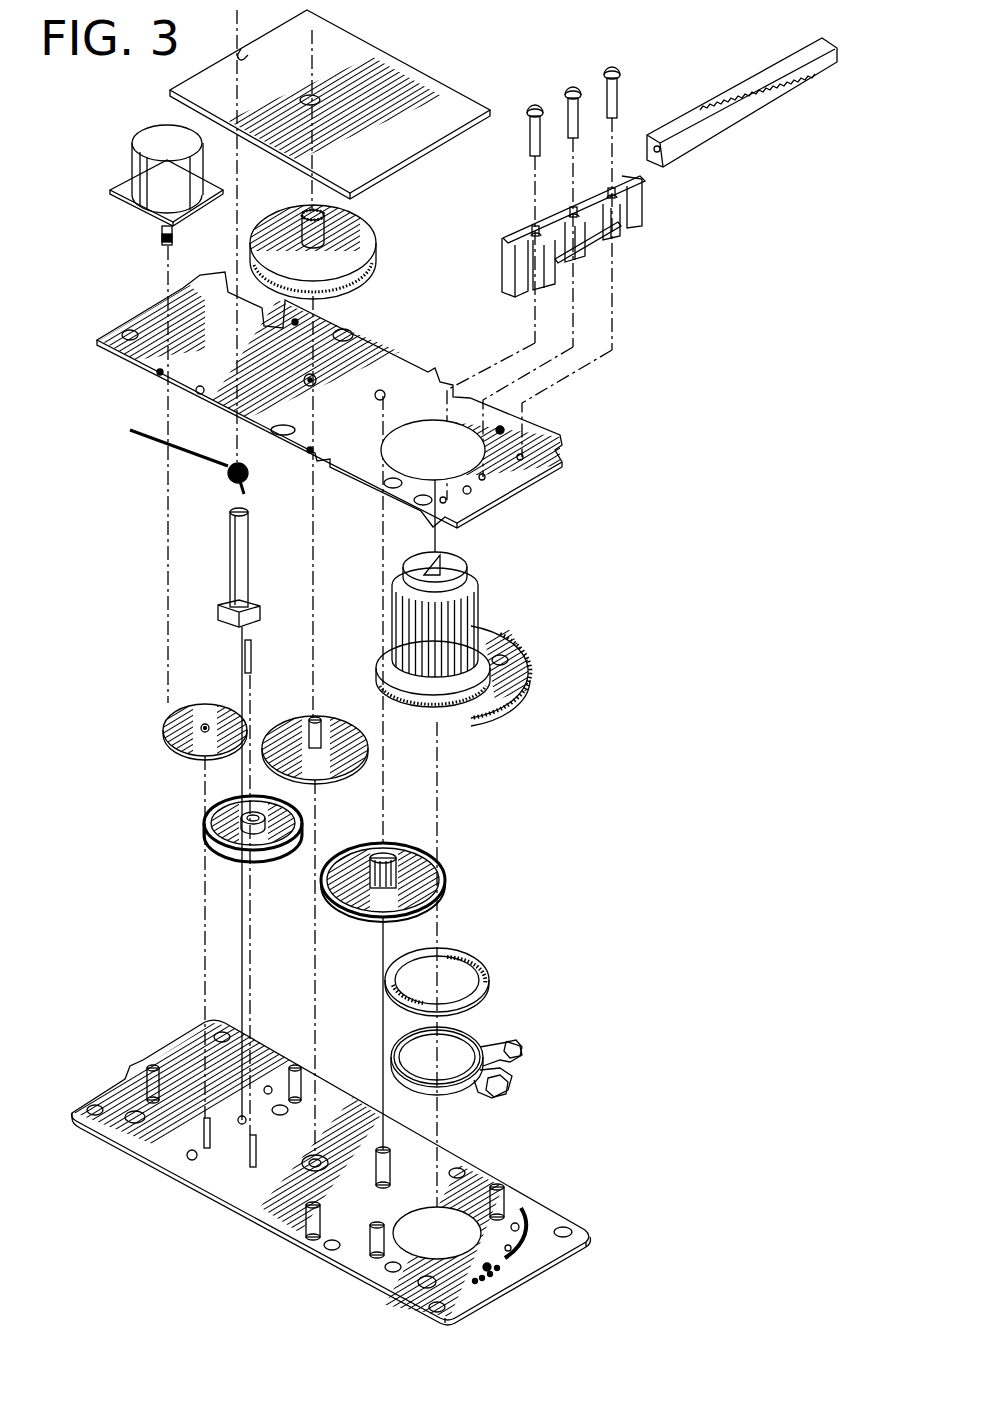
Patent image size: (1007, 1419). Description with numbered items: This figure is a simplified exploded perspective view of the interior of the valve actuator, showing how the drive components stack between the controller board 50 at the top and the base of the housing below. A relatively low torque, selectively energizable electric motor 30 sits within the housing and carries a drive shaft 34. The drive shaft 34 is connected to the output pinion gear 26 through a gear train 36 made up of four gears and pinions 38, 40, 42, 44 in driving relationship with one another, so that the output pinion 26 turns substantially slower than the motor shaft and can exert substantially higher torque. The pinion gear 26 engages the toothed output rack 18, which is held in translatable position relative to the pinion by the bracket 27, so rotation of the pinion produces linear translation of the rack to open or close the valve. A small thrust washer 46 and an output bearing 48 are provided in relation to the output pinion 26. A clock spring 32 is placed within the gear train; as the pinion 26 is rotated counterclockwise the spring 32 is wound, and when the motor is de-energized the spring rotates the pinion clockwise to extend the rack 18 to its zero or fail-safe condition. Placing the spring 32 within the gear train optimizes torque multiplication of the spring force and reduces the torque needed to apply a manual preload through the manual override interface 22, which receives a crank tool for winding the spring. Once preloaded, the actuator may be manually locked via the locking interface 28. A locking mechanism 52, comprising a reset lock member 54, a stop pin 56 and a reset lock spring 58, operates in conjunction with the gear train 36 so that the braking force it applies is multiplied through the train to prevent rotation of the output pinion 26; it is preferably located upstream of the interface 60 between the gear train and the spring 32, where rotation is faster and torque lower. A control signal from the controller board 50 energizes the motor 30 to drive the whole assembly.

The output rack 18 is at (720, 97).
The manual override interface 22 is at (326, 233).
The pinion gear 26 is at (480, 607).
The bracket 27 is at (633, 202).
The locking interface 28 is at (250, 512).
The electric motor 30 is at (140, 145).
The clock spring 32 is at (367, 283).
The drive shaft 34 is at (160, 232).
The gear train 36 is at (516, 773).
The gear 38 is at (207, 723).
The gear 40 is at (203, 820).
The gear 42 is at (316, 727).
The gear 44 is at (430, 878).
The thrust washer 46 is at (485, 965).
The output bearing 48 is at (480, 1040).
The controller board 50 is at (440, 90).
The locking mechanism 52 is at (176, 570).
The reset lock member 54 is at (266, 562).
The stop pin 56 is at (253, 657).
The reset lock spring 58 is at (227, 476).
The interface 60 is at (307, 733).